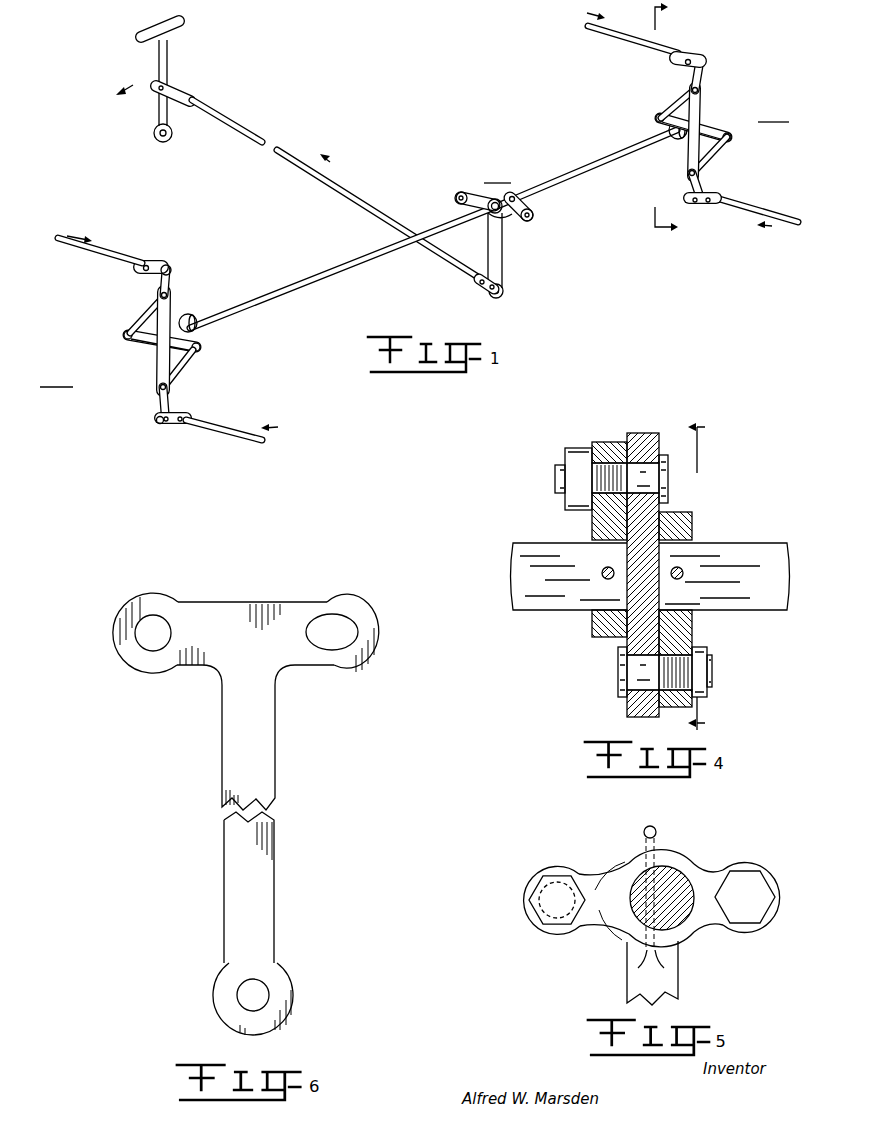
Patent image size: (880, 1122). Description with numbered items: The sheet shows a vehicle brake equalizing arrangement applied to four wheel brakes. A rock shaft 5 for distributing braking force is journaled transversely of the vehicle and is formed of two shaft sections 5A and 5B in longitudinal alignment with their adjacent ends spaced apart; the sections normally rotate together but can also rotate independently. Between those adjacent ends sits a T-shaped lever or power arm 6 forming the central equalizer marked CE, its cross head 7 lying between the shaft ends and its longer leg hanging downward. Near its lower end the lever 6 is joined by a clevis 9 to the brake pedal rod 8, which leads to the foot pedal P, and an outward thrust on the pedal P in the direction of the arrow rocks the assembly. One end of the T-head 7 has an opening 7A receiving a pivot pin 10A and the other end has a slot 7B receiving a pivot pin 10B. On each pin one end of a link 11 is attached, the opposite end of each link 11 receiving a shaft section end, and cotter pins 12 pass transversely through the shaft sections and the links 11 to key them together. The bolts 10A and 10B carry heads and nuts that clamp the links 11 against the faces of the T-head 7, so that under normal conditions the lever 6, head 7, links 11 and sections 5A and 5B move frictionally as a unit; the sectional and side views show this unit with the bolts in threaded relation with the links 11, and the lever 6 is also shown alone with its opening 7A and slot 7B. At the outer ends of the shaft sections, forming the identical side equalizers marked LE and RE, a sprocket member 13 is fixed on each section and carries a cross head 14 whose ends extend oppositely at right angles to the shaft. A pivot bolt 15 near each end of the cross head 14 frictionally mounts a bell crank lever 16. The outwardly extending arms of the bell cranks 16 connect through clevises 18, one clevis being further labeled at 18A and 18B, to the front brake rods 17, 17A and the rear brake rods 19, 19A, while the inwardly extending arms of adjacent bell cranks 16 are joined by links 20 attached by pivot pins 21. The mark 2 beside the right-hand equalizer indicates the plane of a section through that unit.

In FIG. 1, the foot pedal P is at (139, 32).
In FIG. 1, the section line 2 is at (666, 124).
In FIG. 1, the rock shaft 5 is at (433, 229).
In FIG. 4, the rock shaft 5 is at (706, 575).
In FIG. 1, the shaft section 5A is at (380, 256).
In FIG. 4, the shaft section 5A is at (763, 540).
In FIG. 5, the shaft section 5A is at (668, 882).
In FIG. 1, the shaft section 5B is at (581, 174).
In FIG. 4, the shaft section 5B is at (532, 547).
In FIG. 1, the T-shaped lever 6 is at (491, 243).
In FIG. 5, the T-shaped lever 6 is at (628, 993).
In FIG. 6, the T-shaped lever 6 is at (265, 774).
In FIG. 1, the cross head 7 is at (513, 231).
In FIG. 4, the cross head 7 is at (628, 713).
In FIG. 5, the cross head 7 is at (717, 930).
In FIG. 6, the cross head 7 is at (235, 603).
In FIG. 6, the opening 7A is at (153, 633).
In FIG. 4, the slot 7B is at (660, 512).
In FIG. 5, the slot 7B is at (718, 868).
In FIG. 6, the slot 7B is at (332, 632).
In FIG. 1, the brake pedal rod 8 is at (352, 194).
In FIG. 1, the clevis 9 is at (480, 288).
In FIG. 1, the pivot pin 10A is at (460, 191).
In FIG. 4, the pivot pin 10A is at (623, 683).
In FIG. 5, the pivot pin 10A is at (552, 903).
In FIG. 1, the pivot pin 10B is at (528, 222).
In FIG. 4, the pivot pin 10B is at (670, 450).
In FIG. 5, the pivot pin 10B is at (745, 897).
In FIG. 1, the link 11 is at (457, 202).
In FIG. 4, the link 11 is at (597, 525).
In FIG. 5, the link 11 is at (598, 925).
In FIG. 4, the cotter pin 12 is at (605, 577).
In FIG. 5, the cotter pin 12 is at (657, 831).
In FIG. 1, the sprocket member 13 is at (682, 140).
In FIG. 1, the cross head 14 is at (703, 100).
In FIG. 1, the pivot bolt 15 is at (703, 83).
In FIG. 1, the bell crank lever 16 is at (677, 100).
In FIG. 1, the front brake rod 17 is at (97, 247).
In FIG. 1, the front brake rod 17A is at (623, 37).
In FIG. 1, the clevis 18 is at (687, 50).
In FIG. 1, the pin 18A is at (160, 423).
In FIG. 1, the pin 18B is at (167, 267).
In FIG. 1, the rear brake rod 19 is at (236, 442).
In FIG. 1, the rear brake rod 19A is at (758, 210).
In FIG. 1, the link 20 is at (712, 122).
In FIG. 1, the pivot pin 21 is at (653, 118).
In FIG. 1, the center element CE is at (497, 175).
In FIG. 1, the left element LE is at (56, 378).
In FIG. 1, the right element RE is at (773, 113).